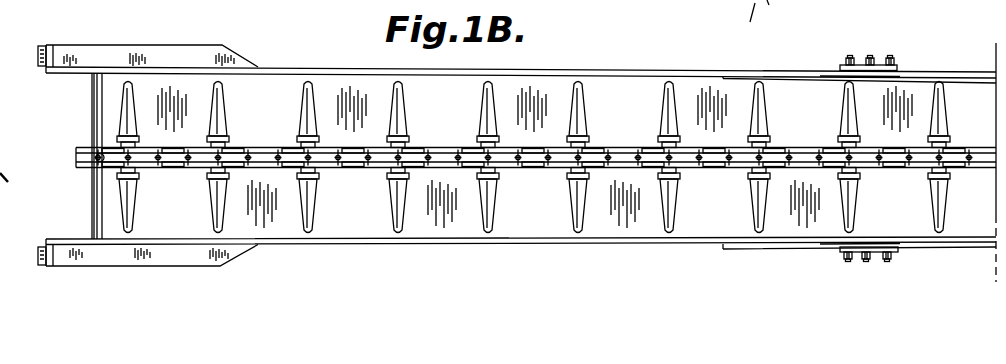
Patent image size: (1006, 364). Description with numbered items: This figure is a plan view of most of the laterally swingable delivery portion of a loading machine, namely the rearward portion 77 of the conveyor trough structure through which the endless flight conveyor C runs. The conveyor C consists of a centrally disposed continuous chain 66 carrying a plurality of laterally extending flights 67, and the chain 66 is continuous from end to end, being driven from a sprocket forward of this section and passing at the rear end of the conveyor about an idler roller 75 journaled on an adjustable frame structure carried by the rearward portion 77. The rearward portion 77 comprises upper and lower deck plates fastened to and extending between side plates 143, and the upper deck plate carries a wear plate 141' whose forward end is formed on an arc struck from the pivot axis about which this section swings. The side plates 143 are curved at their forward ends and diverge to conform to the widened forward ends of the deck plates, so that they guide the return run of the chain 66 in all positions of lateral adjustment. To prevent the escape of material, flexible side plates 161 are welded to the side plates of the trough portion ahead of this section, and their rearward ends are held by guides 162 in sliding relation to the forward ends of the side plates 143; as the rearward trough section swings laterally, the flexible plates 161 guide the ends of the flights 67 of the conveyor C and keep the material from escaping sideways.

The idler roller 75 is at (100, 154).
The rearward portion of the delivery portion of the conveyor trough structure 77 is at (552, 70).
The flight conveyor C is at (436, 148).
The continuous chain 66 is at (553, 165).
The flights 67 is at (665, 117).
The wear plate 141' is at (517, 248).
The side plates 143 is at (948, 70).
The flexible side plates 161 is at (838, 80).
The guides 162 is at (877, 61).